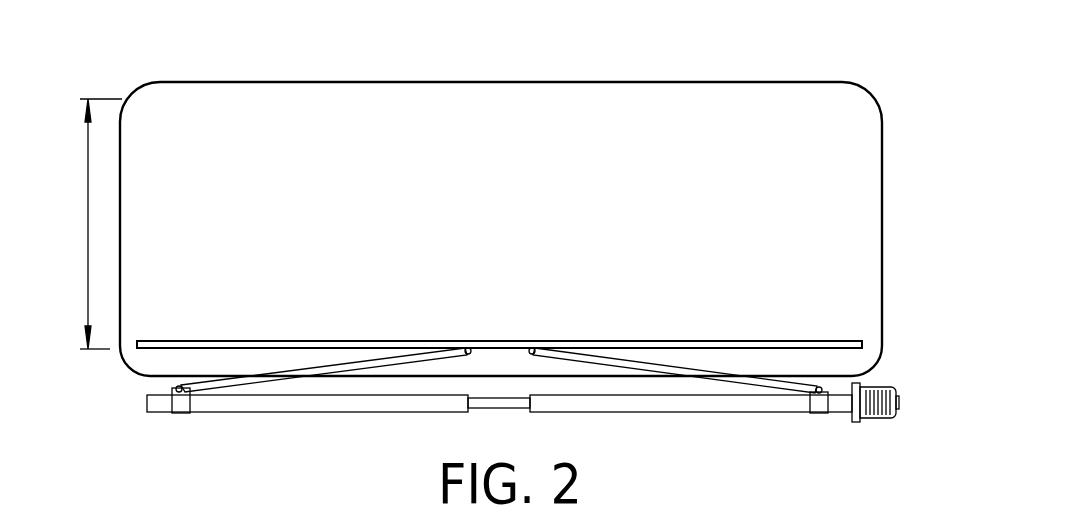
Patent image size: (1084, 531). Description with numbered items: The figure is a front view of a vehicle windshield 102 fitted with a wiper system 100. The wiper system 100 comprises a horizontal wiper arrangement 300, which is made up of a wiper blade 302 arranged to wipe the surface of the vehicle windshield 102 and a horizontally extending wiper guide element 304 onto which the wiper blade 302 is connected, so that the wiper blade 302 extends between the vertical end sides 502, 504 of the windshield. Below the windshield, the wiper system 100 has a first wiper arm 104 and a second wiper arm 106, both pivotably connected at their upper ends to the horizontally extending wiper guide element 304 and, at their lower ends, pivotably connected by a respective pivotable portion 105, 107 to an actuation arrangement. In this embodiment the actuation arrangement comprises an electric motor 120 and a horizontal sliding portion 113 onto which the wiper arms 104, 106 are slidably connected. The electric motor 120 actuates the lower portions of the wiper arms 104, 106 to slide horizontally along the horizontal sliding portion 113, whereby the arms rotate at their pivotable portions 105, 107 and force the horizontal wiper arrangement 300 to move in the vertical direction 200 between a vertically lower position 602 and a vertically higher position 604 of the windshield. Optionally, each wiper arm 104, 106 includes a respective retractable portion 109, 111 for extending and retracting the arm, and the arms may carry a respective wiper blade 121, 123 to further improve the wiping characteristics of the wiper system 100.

The wiper system 100 is at (713, 333).
The vehicle windshield 102 is at (527, 172).
The first wiper arm 104 is at (352, 369).
The pivotable portion 105 is at (174, 389).
The second wiper arm 106 is at (650, 372).
The pivotable portion 107 is at (827, 390).
The retractable portion 109 is at (285, 380).
The retractable portion 111 is at (715, 391).
The horizontal sliding portion 113 is at (243, 401).
The electric motor 120 is at (893, 402).
The wiper blade 121 is at (424, 354).
The wiper blade 123 is at (571, 354).
The vertical direction 200 is at (67, 224).
The horizontal wiper arrangement 300 is at (233, 345).
The wiper blade 302 is at (358, 345).
The horizontally extending wiper guide element 304 is at (647, 345).
The vertical end side 502 is at (118, 160).
The vertical end side 504 is at (882, 148).
The vertically lower position 602 is at (95, 352).
The vertically higher position 604 is at (104, 99).